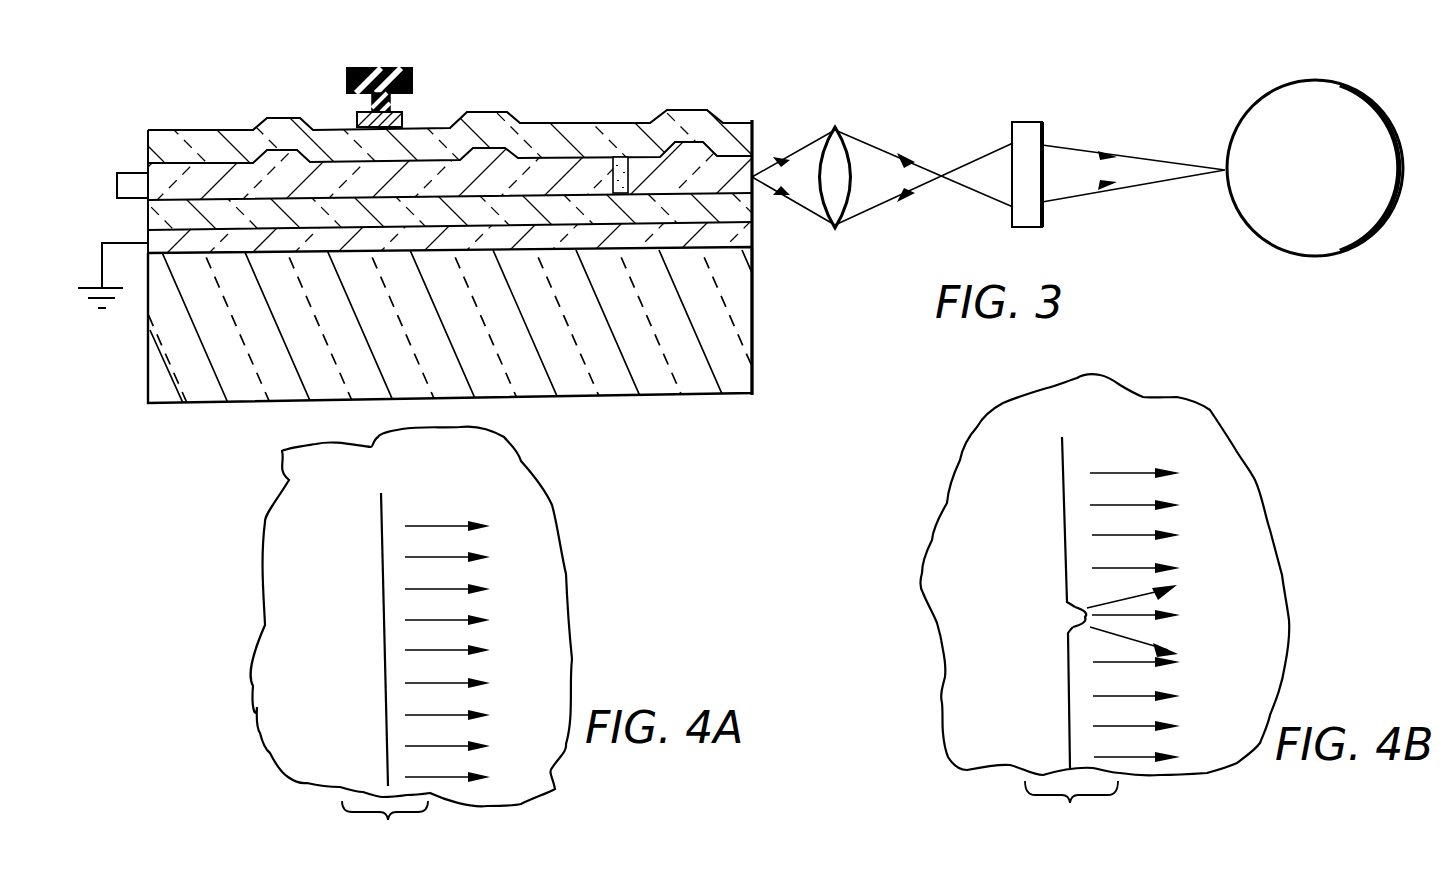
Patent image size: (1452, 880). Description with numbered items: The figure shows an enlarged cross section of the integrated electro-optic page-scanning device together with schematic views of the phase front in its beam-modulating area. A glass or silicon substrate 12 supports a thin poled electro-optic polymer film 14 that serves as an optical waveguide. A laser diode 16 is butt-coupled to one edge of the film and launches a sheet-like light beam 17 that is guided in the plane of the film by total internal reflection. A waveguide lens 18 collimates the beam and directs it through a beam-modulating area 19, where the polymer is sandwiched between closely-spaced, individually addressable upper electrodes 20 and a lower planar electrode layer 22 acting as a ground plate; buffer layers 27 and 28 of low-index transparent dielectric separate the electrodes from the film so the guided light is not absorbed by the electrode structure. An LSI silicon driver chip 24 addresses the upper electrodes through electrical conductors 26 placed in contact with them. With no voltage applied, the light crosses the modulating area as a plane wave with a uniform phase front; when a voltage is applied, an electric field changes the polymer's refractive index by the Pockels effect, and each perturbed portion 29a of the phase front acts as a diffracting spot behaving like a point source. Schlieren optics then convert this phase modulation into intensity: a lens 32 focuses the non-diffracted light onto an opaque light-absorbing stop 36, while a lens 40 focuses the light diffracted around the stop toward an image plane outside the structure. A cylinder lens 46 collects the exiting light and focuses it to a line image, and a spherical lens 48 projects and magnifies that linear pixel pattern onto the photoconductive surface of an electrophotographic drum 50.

In FIG. 3, the substrate 12 is at (755, 335).
In FIG. 3, the electro-optic polymer film 14 is at (753, 152).
In FIG. 4A, the electro-optic polymer film 14 is at (270, 700).
In FIG. 4B, the electro-optic polymer film 14 is at (962, 695).
In FIG. 3, the laser diode 16 is at (117, 186).
In FIG. 4A, the sheet-like light beam 17 is at (381, 601).
In FIG. 4B, the sheet-like light beam 17 is at (1062, 542).
In FIG. 3, the waveguide lens 18 is at (256, 158).
In FIG. 4A, the beam-modulating area 19 is at (385, 829).
In FIG. 4B, the beam-modulating area 19 is at (1071, 809).
In FIG. 3, the upper electrodes 20 is at (402, 118).
In FIG. 3, the lower planar electrode layer 22 is at (755, 232).
In FIG. 3, the LSI silicon driver chip 24 is at (383, 68).
In FIG. 3, the electrical conductors 26 is at (370, 103).
In FIG. 3, the upper buffer layer 27 is at (752, 118).
In FIG. 3, the lower buffer layer 28 is at (755, 205).
In FIG. 4B, the perturbed portion of the phase front 29a is at (1077, 617).
In FIG. 3, the Schlieren lens 32 is at (490, 142).
In FIG. 3, the light-absorbing stop 36 is at (617, 150).
In FIG. 3, the Schlieren lens 40 is at (688, 145).
In FIG. 3, the cylinder lens 46 is at (850, 157).
In FIG. 3, the spherical lens 48 is at (1030, 122).
In FIG. 3, the electrophotographic drum 50 is at (1355, 106).